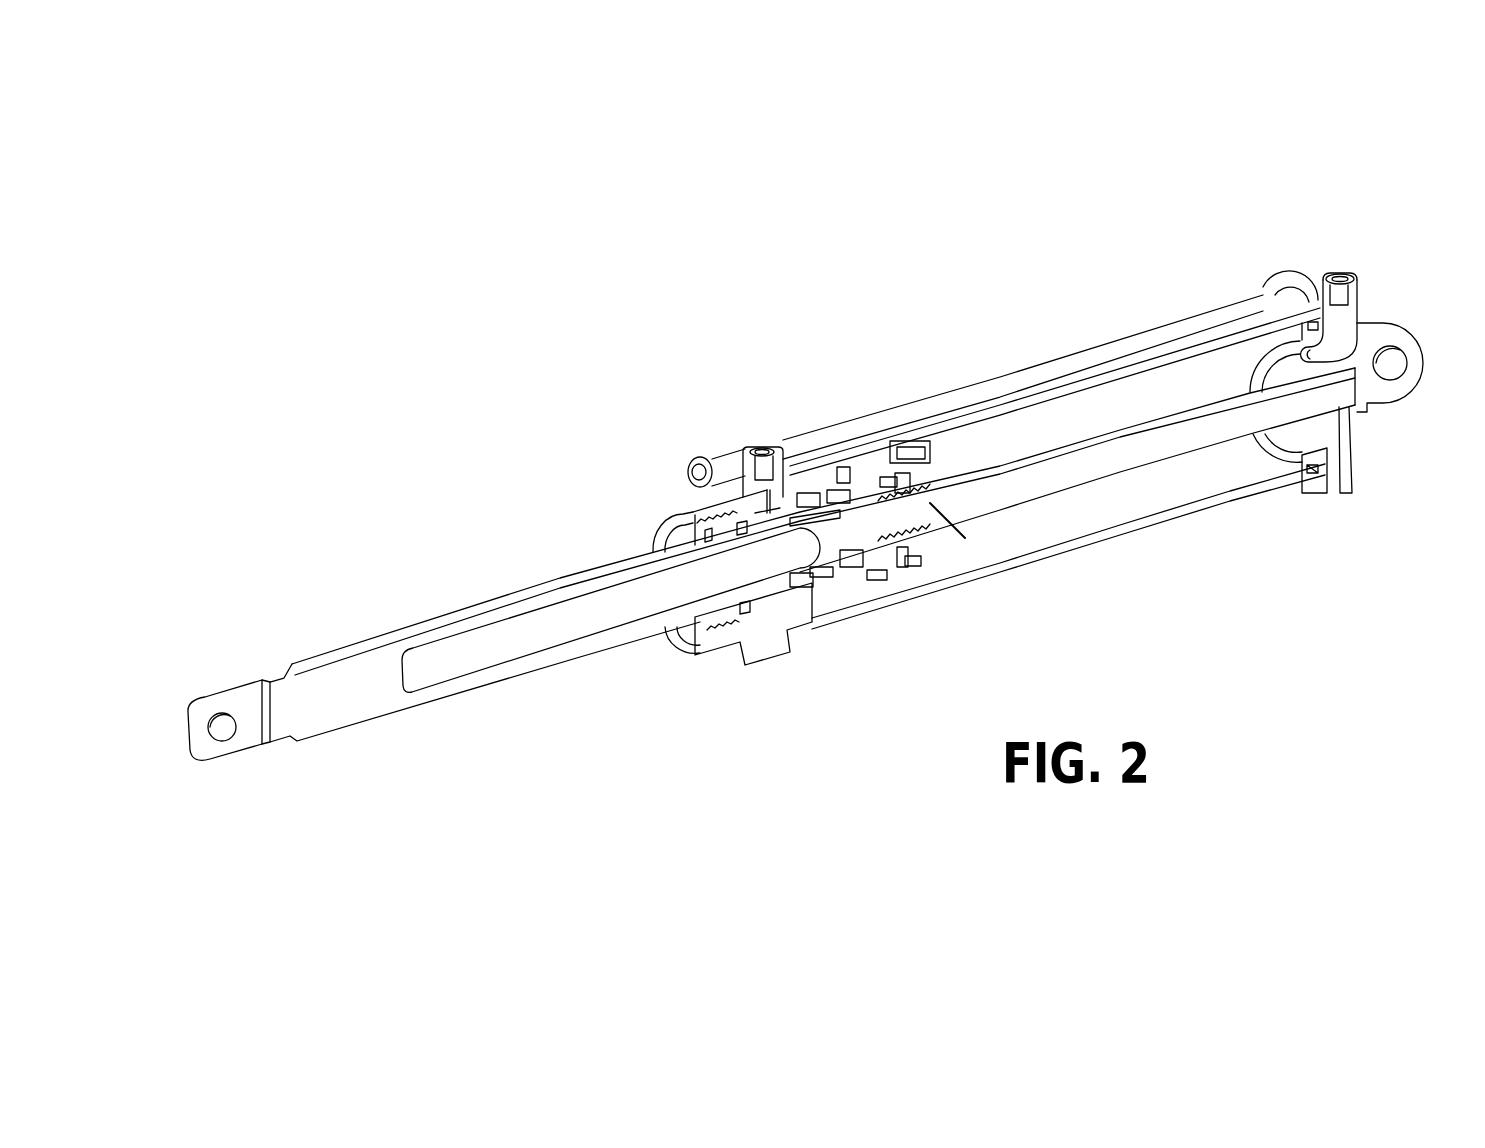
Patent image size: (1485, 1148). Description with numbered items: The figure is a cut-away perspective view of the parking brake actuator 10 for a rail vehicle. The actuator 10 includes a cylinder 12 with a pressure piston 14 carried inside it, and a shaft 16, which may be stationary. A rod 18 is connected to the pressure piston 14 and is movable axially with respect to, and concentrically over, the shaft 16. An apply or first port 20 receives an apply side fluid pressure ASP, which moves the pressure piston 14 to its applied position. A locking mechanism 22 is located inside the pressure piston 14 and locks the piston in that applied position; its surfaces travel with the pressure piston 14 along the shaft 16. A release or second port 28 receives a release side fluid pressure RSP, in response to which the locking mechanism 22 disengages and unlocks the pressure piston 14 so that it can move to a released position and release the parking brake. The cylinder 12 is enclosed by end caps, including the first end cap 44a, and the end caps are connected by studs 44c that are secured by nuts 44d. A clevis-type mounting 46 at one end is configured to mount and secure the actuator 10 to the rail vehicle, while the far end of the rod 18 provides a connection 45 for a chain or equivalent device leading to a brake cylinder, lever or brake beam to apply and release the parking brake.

The actuator 10 is at (580, 272).
The cylinder 12 is at (1063, 427).
The pressure piston 14 is at (850, 463).
The shaft 16 is at (1350, 427).
The rod 18 is at (480, 607).
The apply or first port 20 is at (738, 433).
The locking mechanism 22 is at (912, 556).
The release or second port 28 is at (1314, 255).
The first end cap 44a is at (738, 645).
The studs 44c is at (971, 386).
The nuts 44d is at (688, 467).
The connection 45 is at (187, 713).
The clevis-type mounting 46 is at (1413, 336).
The apply side fluid pressure ASP is at (758, 422).
The release side fluid pressure RSP is at (1349, 248).